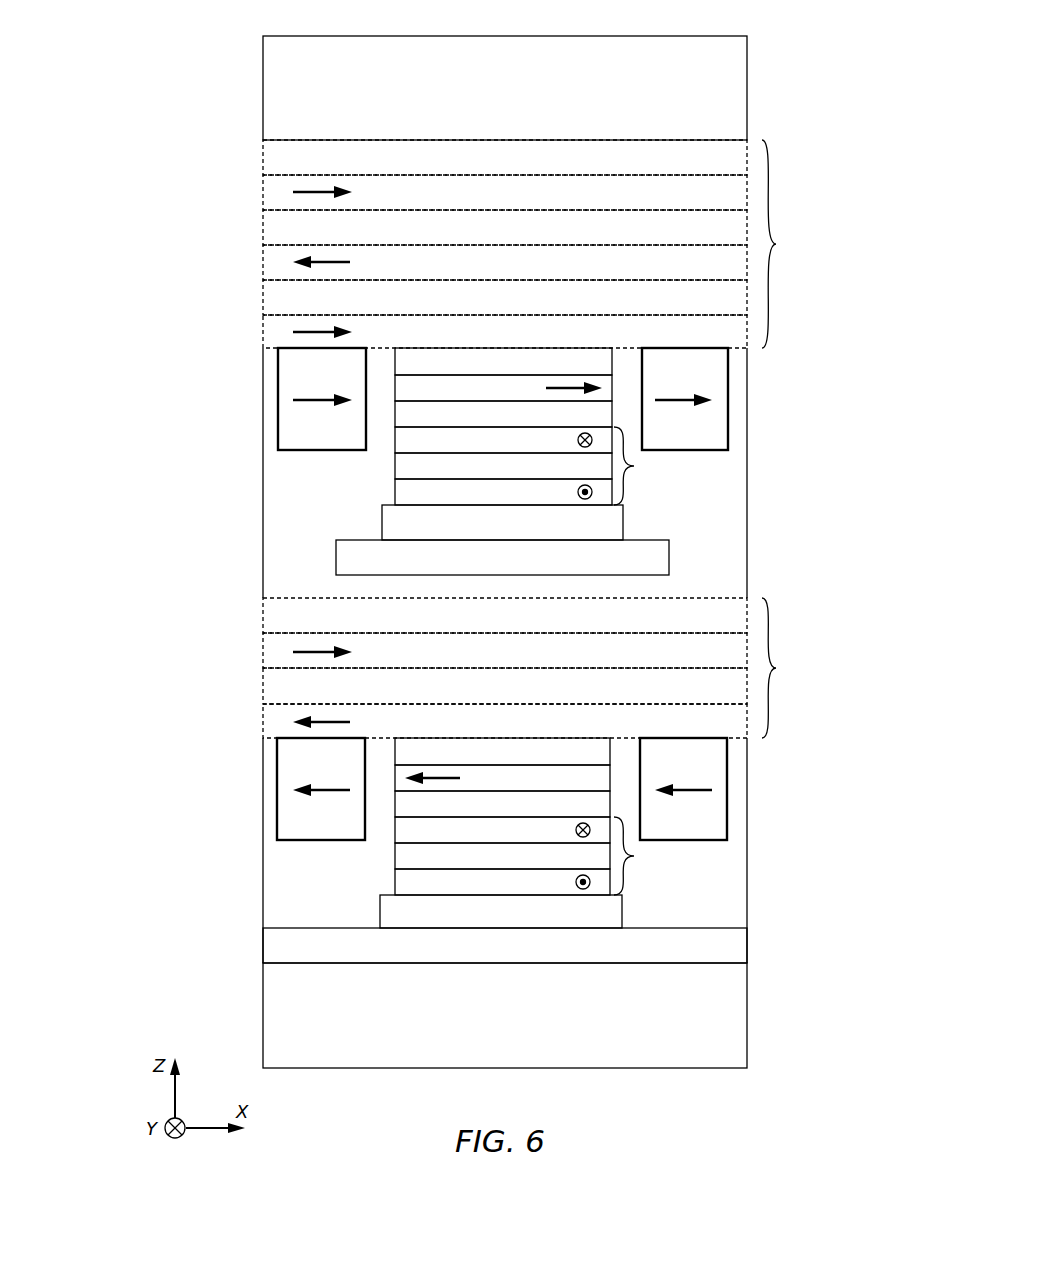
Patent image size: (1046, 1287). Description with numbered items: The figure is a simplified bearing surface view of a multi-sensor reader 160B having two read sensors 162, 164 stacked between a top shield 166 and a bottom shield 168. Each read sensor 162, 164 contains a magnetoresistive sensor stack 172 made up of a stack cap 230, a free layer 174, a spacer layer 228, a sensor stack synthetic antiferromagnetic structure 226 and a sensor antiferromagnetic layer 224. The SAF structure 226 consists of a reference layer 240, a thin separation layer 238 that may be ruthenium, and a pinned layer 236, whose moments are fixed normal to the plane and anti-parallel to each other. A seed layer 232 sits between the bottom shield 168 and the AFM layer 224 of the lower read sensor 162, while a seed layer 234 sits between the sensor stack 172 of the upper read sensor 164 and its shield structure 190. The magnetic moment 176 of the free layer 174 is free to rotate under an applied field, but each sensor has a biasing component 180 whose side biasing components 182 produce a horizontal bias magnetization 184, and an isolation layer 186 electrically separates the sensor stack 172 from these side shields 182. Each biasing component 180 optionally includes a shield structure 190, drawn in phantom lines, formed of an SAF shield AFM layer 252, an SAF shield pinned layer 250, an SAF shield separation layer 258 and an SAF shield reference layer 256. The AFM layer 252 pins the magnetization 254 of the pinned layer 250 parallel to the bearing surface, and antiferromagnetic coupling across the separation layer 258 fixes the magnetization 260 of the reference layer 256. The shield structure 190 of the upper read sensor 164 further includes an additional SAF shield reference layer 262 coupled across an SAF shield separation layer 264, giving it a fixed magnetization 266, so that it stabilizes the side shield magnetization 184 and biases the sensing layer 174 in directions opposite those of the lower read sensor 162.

The multi-sensor reader 160B is at (136, 43).
The read sensor 162 is at (779, 944).
The read sensor 164 is at (183, 381).
The top shield 166 is at (595, 100).
The bottom shield 168 is at (616, 1026).
The magnetoresistive sensor stack 172 is at (283, 512).
The free layer 174 is at (535, 398).
The magnetic moment of the free layer 176 is at (583, 385).
The biasing component 180 is at (190, 410).
The side biasing components 182 is at (300, 447).
The magnetization of the side shields 184 is at (300, 408).
The isolation layer 186 is at (290, 482).
The shield structure 190 is at (792, 439).
The sensor antiferromagnetic layer 224 is at (578, 534).
The sensor stack synthetic antiferromagnetic structure 226 is at (634, 466).
The spacer layer 228 is at (564, 424).
The stack cap 230 is at (570, 372).
The seed layer 232 is at (542, 955).
The seed layer 234 is at (542, 565).
The pinned layer 236 is at (550, 502).
The thin separation layer 238 is at (550, 476).
The reference layer 240 is at (552, 450).
The SAF shield pinned layer 250 is at (609, 203).
The SAF shield AFM layer 252 is at (617, 168).
The magnetization of the SAF shield pinned layer 254 is at (318, 190).
The SAF shield reference layer 256 is at (609, 273).
The SAF shield separation layer 258 is at (609, 238).
The magnetization of the SAF shield reference layer 260 is at (318, 258).
The additional SAF shield reference layer 262 is at (609, 343).
The SAF shield separation layer 264 is at (609, 308).
The magnetization of the additional SAF shield reference layer 266 is at (318, 328).